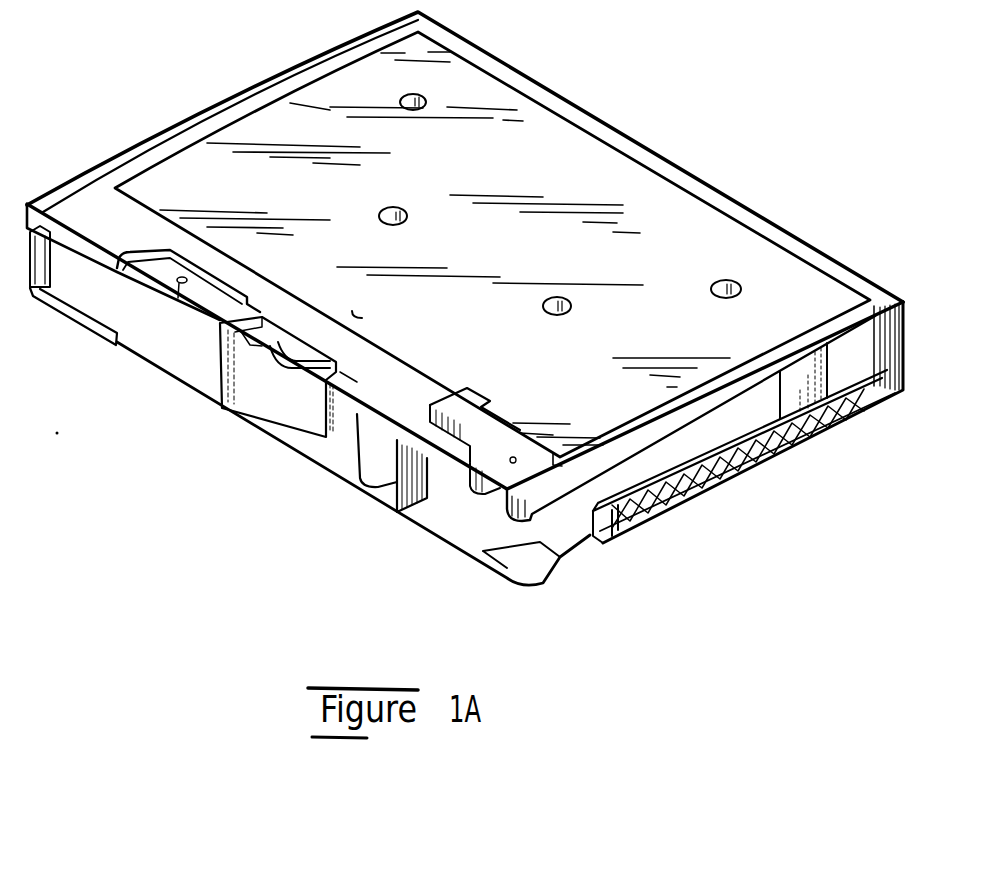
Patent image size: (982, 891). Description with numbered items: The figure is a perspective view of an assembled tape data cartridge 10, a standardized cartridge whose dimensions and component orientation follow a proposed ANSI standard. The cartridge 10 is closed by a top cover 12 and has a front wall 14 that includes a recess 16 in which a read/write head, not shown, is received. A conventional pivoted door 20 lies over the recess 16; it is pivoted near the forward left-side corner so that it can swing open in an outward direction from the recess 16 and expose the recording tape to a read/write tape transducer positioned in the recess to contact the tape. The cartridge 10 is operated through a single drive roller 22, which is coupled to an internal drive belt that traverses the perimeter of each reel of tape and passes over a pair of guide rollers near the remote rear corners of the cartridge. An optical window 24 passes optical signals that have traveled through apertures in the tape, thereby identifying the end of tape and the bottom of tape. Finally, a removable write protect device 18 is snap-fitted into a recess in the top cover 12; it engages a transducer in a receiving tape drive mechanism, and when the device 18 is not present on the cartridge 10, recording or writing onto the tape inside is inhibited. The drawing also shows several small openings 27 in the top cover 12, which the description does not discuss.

The tape data cartridge 10 is at (678, 94).
The top cover 12 is at (592, 391).
The front wall 14 is at (314, 422).
The recess 16 is at (178, 298).
The write protect device 18 is at (483, 503).
The pivoted door 20 is at (97, 303).
The drive roller 22 is at (268, 357).
The optical window 24 is at (407, 487).
The holes 27 is at (422, 110).